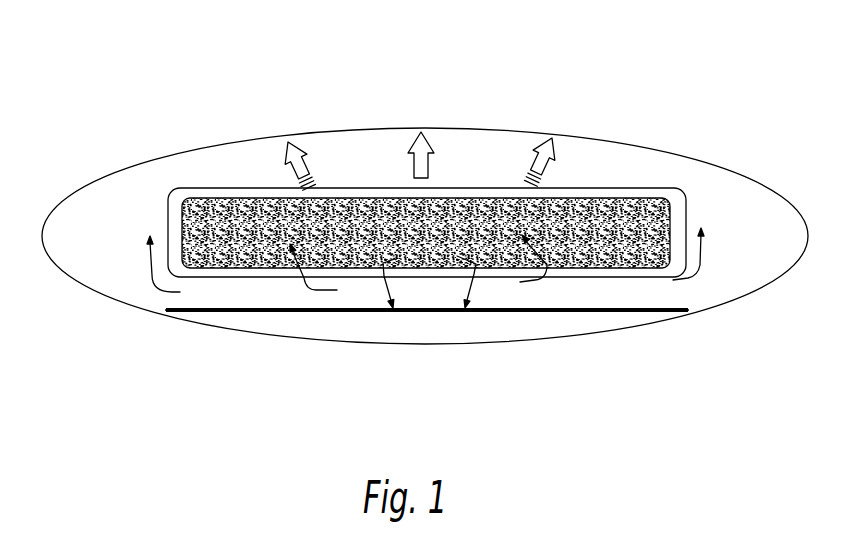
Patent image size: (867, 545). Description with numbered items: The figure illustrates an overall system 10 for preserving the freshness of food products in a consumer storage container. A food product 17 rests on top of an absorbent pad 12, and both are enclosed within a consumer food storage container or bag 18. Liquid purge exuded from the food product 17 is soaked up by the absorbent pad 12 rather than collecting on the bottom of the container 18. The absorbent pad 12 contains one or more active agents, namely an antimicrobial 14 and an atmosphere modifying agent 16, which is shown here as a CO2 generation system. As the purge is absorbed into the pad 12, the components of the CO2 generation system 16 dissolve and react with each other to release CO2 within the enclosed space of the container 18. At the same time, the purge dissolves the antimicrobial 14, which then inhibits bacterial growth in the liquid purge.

The overall system 10 is at (208, 83).
The absorbent pad 12 is at (438, 313).
The antimicrobial 14 is at (640, 311).
The atmosphere modifying agent 16 is at (220, 313).
The food product 17 is at (608, 223).
The consumer food storage container or bag 18 is at (608, 140).